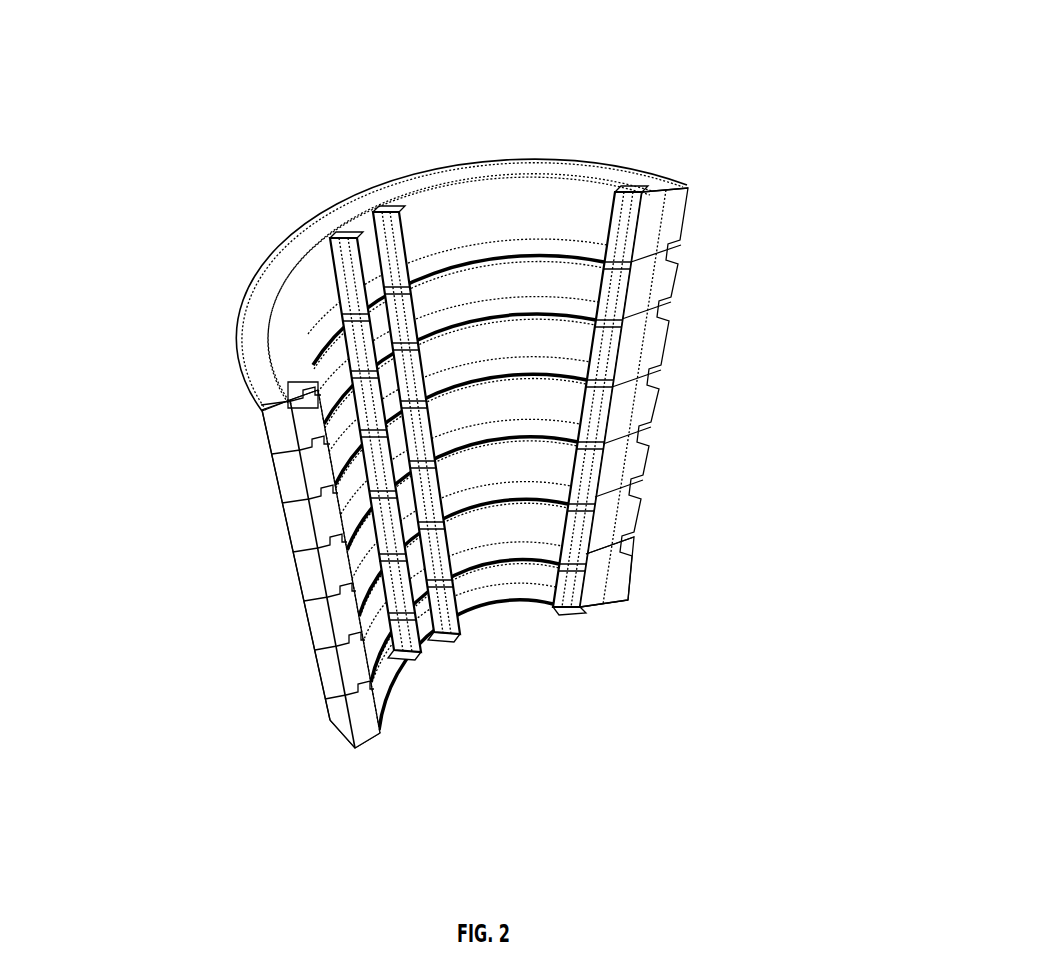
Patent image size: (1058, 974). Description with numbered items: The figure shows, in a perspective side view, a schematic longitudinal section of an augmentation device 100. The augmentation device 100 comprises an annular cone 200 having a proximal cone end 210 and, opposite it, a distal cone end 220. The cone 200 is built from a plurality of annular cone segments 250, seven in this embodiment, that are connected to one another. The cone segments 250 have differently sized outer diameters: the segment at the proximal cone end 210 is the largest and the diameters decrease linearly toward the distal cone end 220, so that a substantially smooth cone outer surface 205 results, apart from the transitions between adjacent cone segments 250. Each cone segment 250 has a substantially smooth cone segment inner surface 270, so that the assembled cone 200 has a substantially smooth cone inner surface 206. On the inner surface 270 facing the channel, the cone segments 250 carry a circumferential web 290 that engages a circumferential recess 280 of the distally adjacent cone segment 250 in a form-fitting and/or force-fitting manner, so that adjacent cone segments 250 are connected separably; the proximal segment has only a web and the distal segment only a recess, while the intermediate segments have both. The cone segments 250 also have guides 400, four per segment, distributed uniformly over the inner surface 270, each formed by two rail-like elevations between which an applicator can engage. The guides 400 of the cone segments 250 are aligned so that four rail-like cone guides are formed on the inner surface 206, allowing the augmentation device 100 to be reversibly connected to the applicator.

The augmentation device 100 is at (499, 455).
The annular cone 200 is at (499, 482).
The cone outer surface 205 is at (253, 407).
The cone inner surface 206 is at (590, 590).
The proximal cone end 210 is at (177, 300).
The distal cone end 220 is at (237, 788).
The annular cone segments 250 is at (340, 715).
The cone segment inner surface 270 is at (455, 223).
The recess 280 is at (687, 397).
The circumferential web 290 is at (658, 265).
The guides 400 is at (562, 595).